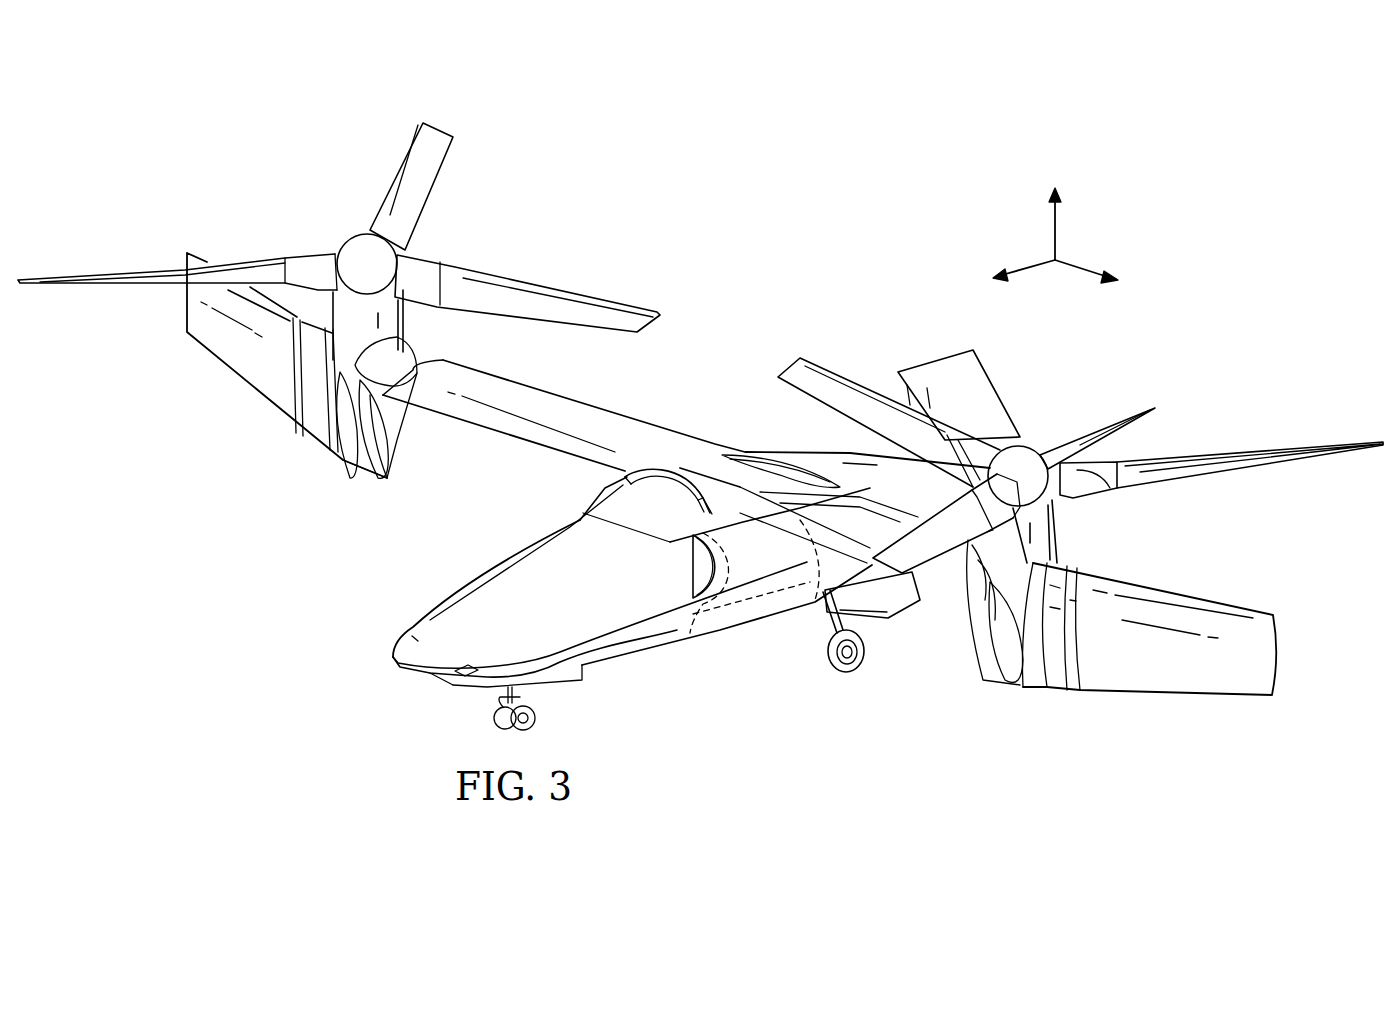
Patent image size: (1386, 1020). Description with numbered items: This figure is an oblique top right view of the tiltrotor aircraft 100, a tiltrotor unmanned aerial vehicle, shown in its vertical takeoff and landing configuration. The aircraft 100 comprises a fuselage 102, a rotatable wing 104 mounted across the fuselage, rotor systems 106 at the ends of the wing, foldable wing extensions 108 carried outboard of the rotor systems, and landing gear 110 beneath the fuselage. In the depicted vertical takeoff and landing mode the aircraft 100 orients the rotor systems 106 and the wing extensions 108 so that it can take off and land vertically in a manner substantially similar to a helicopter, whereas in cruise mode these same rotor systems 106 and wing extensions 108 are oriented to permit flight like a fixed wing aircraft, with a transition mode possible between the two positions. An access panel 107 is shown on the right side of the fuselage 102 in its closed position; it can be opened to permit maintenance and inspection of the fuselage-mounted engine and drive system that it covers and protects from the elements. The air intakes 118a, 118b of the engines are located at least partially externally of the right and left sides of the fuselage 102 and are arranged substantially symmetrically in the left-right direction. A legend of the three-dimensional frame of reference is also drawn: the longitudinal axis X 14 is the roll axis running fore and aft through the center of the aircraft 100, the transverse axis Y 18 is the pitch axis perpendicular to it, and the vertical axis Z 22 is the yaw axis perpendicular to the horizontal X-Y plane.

The tiltrotor aircraft 100 is at (700, 441).
The fuselage 102 is at (470, 573).
The rotatable wing 104 is at (604, 410).
The rotor systems 106 is at (337, 226).
The access panel 107 is at (762, 573).
The foldable wing extensions 108 is at (237, 382).
The landing gear 110 is at (495, 716).
The air intake 118a is at (698, 565).
The air intake 118b is at (583, 512).
The longitudinal axis X 14 is at (1030, 265).
The transverse axis Y 18 is at (1075, 272).
The vertical axis Z 22 is at (1057, 232).